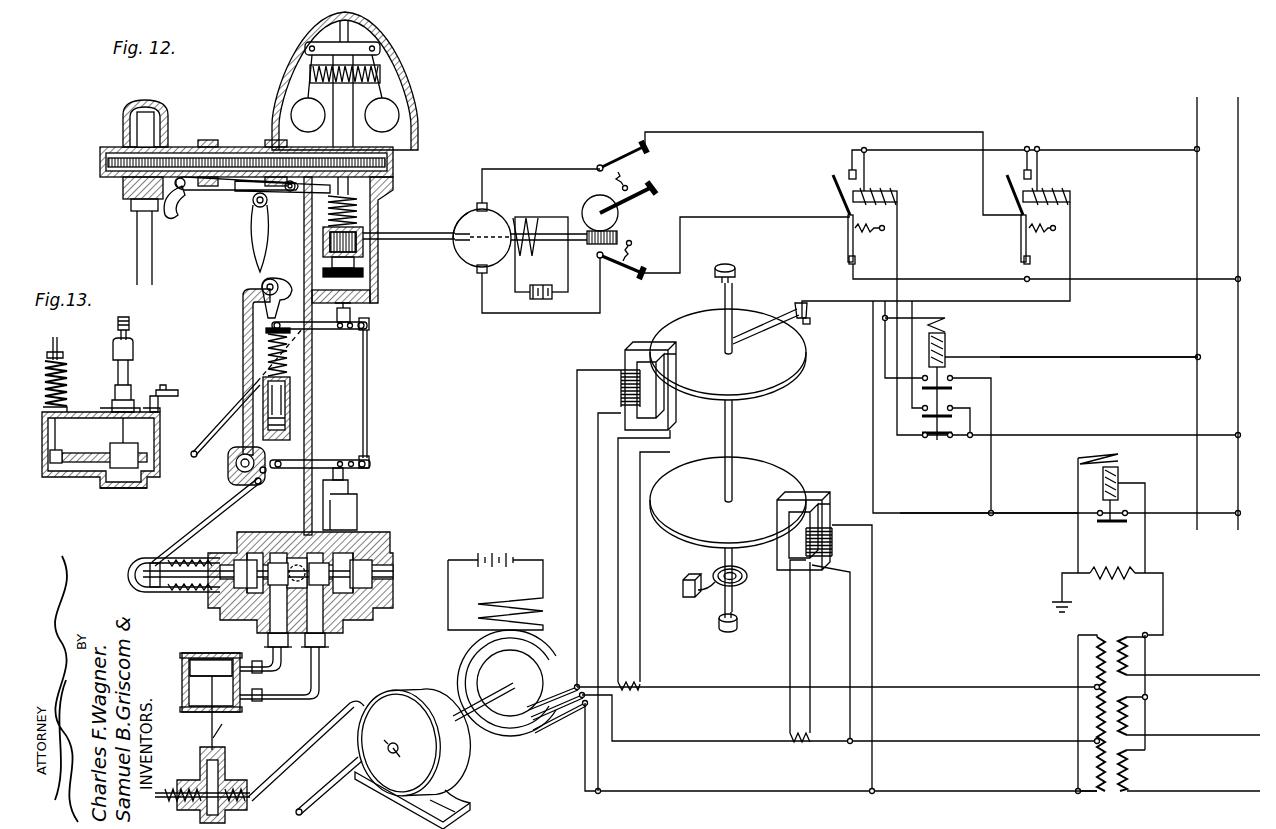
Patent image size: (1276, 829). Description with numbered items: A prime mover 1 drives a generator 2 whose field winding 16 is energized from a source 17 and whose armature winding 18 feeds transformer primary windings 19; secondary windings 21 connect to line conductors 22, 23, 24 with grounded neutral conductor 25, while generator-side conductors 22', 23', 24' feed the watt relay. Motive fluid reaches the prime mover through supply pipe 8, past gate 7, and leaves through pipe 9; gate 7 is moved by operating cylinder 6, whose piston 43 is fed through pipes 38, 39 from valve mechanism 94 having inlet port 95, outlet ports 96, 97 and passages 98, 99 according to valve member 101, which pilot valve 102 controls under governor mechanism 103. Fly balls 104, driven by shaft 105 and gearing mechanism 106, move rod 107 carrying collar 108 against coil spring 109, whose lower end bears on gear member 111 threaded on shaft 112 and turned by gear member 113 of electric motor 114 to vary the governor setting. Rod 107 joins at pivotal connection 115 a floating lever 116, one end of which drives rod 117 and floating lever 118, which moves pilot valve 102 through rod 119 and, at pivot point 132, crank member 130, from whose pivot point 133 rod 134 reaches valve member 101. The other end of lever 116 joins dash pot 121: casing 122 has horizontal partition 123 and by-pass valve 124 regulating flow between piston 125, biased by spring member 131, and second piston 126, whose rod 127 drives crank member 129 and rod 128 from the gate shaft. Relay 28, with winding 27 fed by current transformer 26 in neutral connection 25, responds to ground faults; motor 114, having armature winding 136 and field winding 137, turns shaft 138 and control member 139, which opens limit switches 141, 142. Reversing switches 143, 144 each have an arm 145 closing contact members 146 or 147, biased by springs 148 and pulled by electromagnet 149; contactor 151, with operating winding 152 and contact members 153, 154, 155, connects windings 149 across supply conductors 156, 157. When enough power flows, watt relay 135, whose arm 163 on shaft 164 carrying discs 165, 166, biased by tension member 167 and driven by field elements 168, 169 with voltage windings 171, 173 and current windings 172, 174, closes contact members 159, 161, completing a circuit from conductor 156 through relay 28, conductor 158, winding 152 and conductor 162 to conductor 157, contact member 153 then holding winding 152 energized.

In FIG. 12, the prime mover 1 is at (380, 687).
In FIG. 12, the generator 2 is at (456, 665).
In FIG. 12, the operating cylinder 6 is at (177, 690).
In FIG. 12, the gate 7 is at (177, 772).
In FIG. 12, the supply pipe 8 is at (309, 741).
In FIG. 12, the pipe 9 is at (329, 781).
In FIG. 12, the field winding 16 is at (505, 599).
In FIG. 12, the source 17 is at (488, 553).
In FIG. 12, the armature winding 18 is at (511, 735).
In FIG. 12, the primary windings 19 is at (1094, 636).
In FIG. 12, the secondary windings 21 is at (1128, 636).
In FIG. 12, the transmission line conductor 22 is at (1193, 666).
In FIG. 12, the transmission line conductor 23 is at (1193, 726).
In FIG. 12, the transmission line conductor 24 is at (1193, 781).
In FIG. 12, the conductor 22' is at (838, 676).
In FIG. 12, the conductor 23' is at (841, 719).
In FIG. 12, the conductor 24' is at (841, 748).
In FIG. 12, the grounded neutral conductor 25 is at (1164, 597).
In FIG. 12, the current transformer 26 is at (1112, 561).
In FIG. 12, the winding 27 is at (1120, 470).
In FIG. 12, the corrective-initiating relay 28 is at (1112, 533).
In FIG. 12, the pipe 38 is at (278, 669).
In FIG. 12, the pipe 39 is at (320, 680).
In FIG. 12, the piston 43 is at (211, 667).
In FIG. 12, the valve mechanism 94 is at (430, 575).
In FIG. 12, the fluid-inlet port 95 is at (298, 548).
In FIG. 12, the outlet port 96 is at (255, 600).
In FIG. 12, the outlet port 97 is at (351, 600).
In FIG. 12, the passage 98 is at (268, 630).
In FIG. 12, the passage 99 is at (330, 628).
In FIG. 12, the valve member 101 is at (206, 600).
In FIG. 12, the pilot valve 102 is at (357, 492).
In FIG. 12, the governor mechanism 103 is at (415, 272).
In FIG. 12, the fly balls 104 is at (388, 80).
In FIG. 12, the shaft 105 is at (153, 247).
In FIG. 12, the gearing mechanism 106 is at (232, 158).
In FIG. 12, the rod 107 is at (333, 188).
In FIG. 12, the collar 108 is at (378, 203).
In FIG. 12, the coil spring 109 is at (326, 209).
In FIG. 12, the gear member 111 is at (323, 236).
In FIG. 12, the shaft 112 is at (330, 260).
In FIG. 12, the gear member 113 is at (364, 228).
In FIG. 12, the electric motor 114 is at (528, 203).
In FIG. 12, the pivotal connection 115 is at (352, 318).
In FIG. 13, the floating lever 116 is at (58, 346).
In FIG. 12, the floating lever 116 is at (333, 330).
In FIG. 12, the rod 117 is at (368, 386).
In FIG. 12, the floating lever 118 is at (332, 458).
In FIG. 12, the rod 119 is at (344, 474).
In FIG. 13, the dash pot 121 is at (112, 515).
In FIG. 12, the dash pot 121 is at (291, 398).
In FIG. 13, the casing 122 is at (146, 486).
In FIG. 13, the horizontal partition 123 is at (104, 447).
In FIG. 13, the by-pass valve 124 is at (157, 448).
In FIG. 13, the piston 125 is at (56, 476).
In FIG. 13, the second piston 126 is at (126, 452).
In FIG. 13, the rod 127 is at (127, 346).
In FIG. 12, the rod 127 is at (244, 312).
In FIG. 12, the rod 128 is at (230, 410).
In FIG. 12, the crank member 129 is at (282, 287).
In FIG. 12, the crank member 130 is at (262, 463).
In FIG. 13, the spring member 131 is at (66, 386).
In FIG. 12, the spring member 131 is at (268, 350).
In FIG. 12, the pivot point 132 is at (282, 476).
In FIG. 12, the pivot point 133 is at (277, 492).
In FIG. 12, the rod 134 is at (196, 537).
In FIG. 12, the watt relay 135 is at (775, 293).
In FIG. 12, the armature winding 136 is at (458, 224).
In FIG. 12, the field winding 137 is at (534, 250).
In FIG. 12, the shaft 138 is at (440, 238).
In FIG. 12, the control member 139 is at (630, 196).
In FIG. 12, the limit switch 141 is at (611, 152).
In FIG. 12, the limit switch 142 is at (625, 276).
In FIG. 12, the reversing switch 143 is at (1086, 175).
In FIG. 12, the reversing switch 144 is at (910, 175).
In FIG. 12, the movable contact-making arm 145 is at (847, 246).
In FIG. 12, the cooperating contact members 146 is at (848, 173).
In FIG. 12, the cooperating contact members 147 is at (855, 262).
In FIG. 12, the spring 148 is at (871, 231).
In FIG. 12, the electromagnet 149 is at (898, 197).
In FIG. 12, the electromagnetic contactor 151 is at (985, 333).
In FIG. 12, the operating winding 152 is at (946, 349).
In FIG. 12, the contact member 153 is at (950, 389).
In FIG. 12, the contact member 154 is at (921, 416).
In FIG. 12, the contact member 155 is at (934, 438).
In FIG. 12, the supply conductor 156 is at (1238, 120).
In FIG. 12, the supply conductor 157 is at (1196, 120).
In FIG. 12, the conductor 158 is at (1024, 513).
In FIG. 12, the contact member 159 is at (811, 323).
In FIG. 12, the contact member 161 is at (803, 305).
In FIG. 12, the conductor 162 is at (1074, 351).
In FIG. 12, the arm 163 is at (766, 333).
In FIG. 12, the shaft 164 is at (733, 425).
In FIG. 12, the metal disc 165 is at (786, 378).
In FIG. 12, the metal disc 166 is at (790, 463).
In FIG. 12, the tension member 167 is at (712, 566).
In FIG. 12, the field element 168 is at (635, 353).
In FIG. 12, the field element 169 is at (847, 493).
In FIG. 12, the voltage winding 171 is at (621, 390).
In FIG. 12, the current winding 172 is at (668, 425).
In FIG. 12, the voltage winding 173 is at (827, 548).
In FIG. 12, the current winding 174 is at (796, 568).